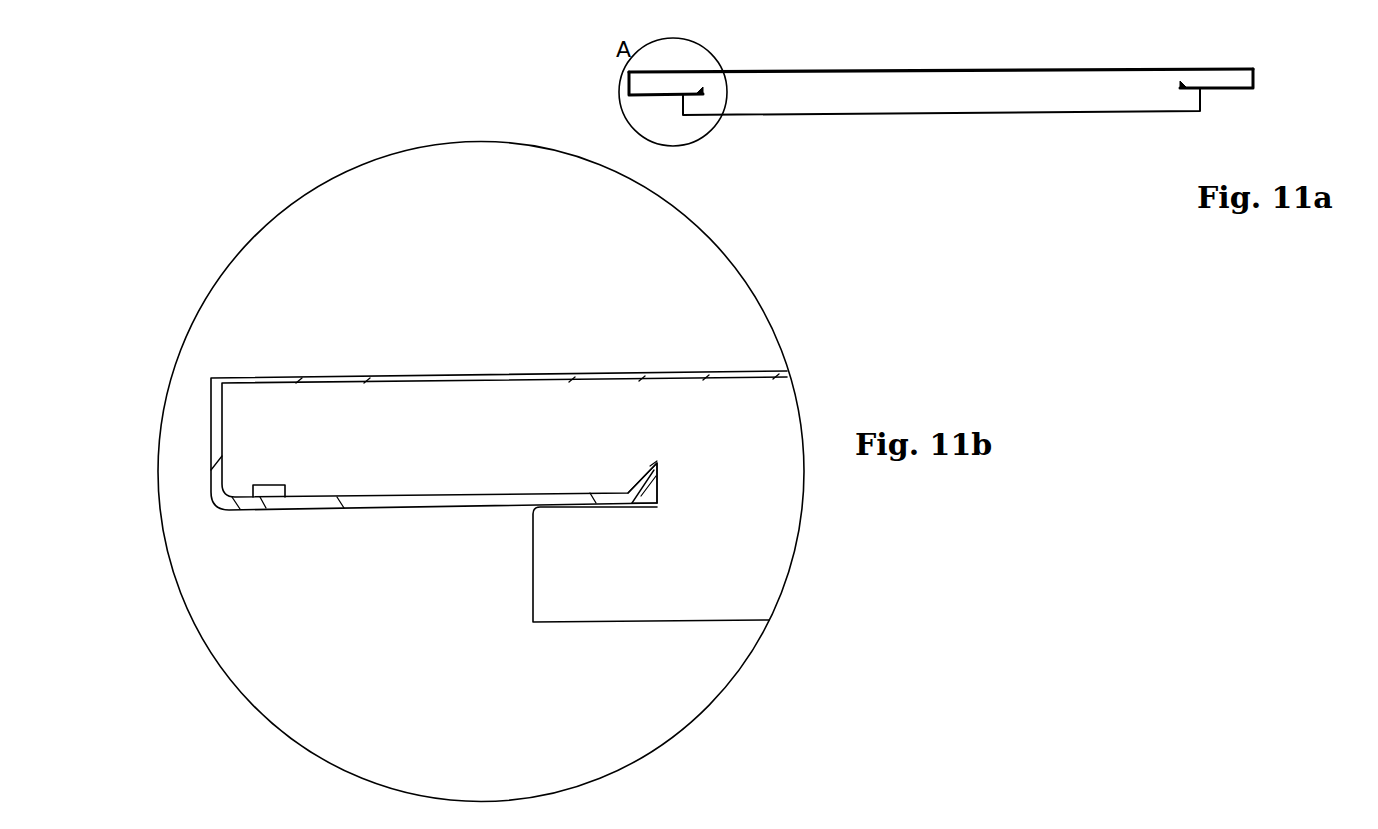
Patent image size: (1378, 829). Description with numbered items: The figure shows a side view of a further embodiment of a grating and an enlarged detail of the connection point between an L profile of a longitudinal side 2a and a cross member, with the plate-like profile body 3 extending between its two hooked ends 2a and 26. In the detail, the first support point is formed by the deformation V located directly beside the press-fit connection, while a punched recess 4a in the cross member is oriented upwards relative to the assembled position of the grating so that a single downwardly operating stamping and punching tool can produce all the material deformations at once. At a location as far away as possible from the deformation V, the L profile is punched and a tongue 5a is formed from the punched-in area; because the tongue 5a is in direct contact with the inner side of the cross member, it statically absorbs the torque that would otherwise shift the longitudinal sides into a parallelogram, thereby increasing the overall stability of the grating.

In FIG. 11A, the longitudinal side 2a is at (632, 88).
In FIG. 11A, the second hook-shaped end of plate 26 is at (1255, 70).
In FIG. 11A, the plate / tray body 3 is at (1095, 113).
In FIG. 11B, the deformation V is at (660, 462).
In FIG. 11B, the punched recess 4a is at (658, 488).
In FIG. 11B, the tongue 5a is at (272, 492).